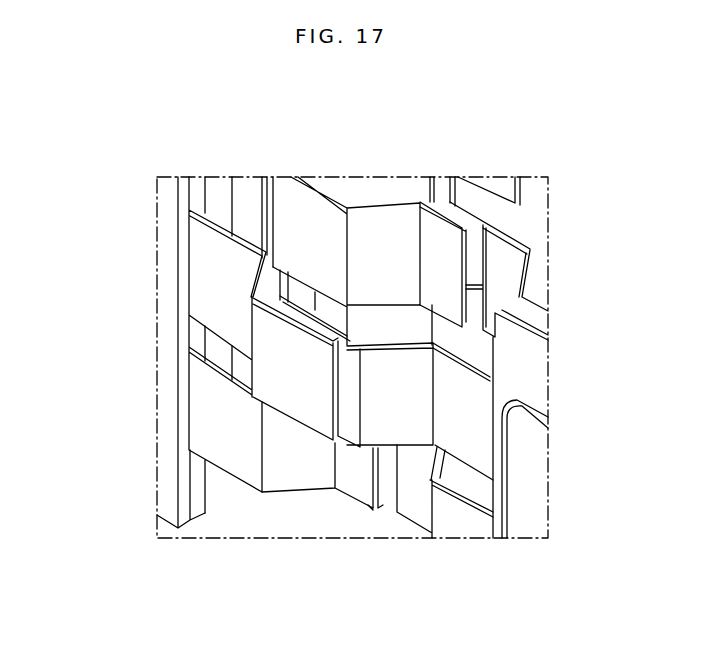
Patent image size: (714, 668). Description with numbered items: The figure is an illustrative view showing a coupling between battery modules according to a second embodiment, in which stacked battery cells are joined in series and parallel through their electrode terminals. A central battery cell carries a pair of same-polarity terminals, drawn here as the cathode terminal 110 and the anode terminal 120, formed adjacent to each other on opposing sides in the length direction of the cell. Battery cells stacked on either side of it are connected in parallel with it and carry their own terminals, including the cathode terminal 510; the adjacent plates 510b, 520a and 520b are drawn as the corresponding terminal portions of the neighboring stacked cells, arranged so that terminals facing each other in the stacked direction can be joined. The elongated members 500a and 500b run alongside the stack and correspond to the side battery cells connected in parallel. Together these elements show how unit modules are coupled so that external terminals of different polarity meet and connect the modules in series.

The cathode terminal 110 is at (503, 278).
The anode terminal 120 is at (388, 232).
The first cooling pipe 500a is at (522, 490).
The second cooling pipe 500b is at (168, 477).
The cathode terminal 510 is at (468, 517).
The heat transfer fin 510b is at (218, 275).
The first connection plate 520a is at (412, 187).
The second connection plate 520b is at (298, 463).